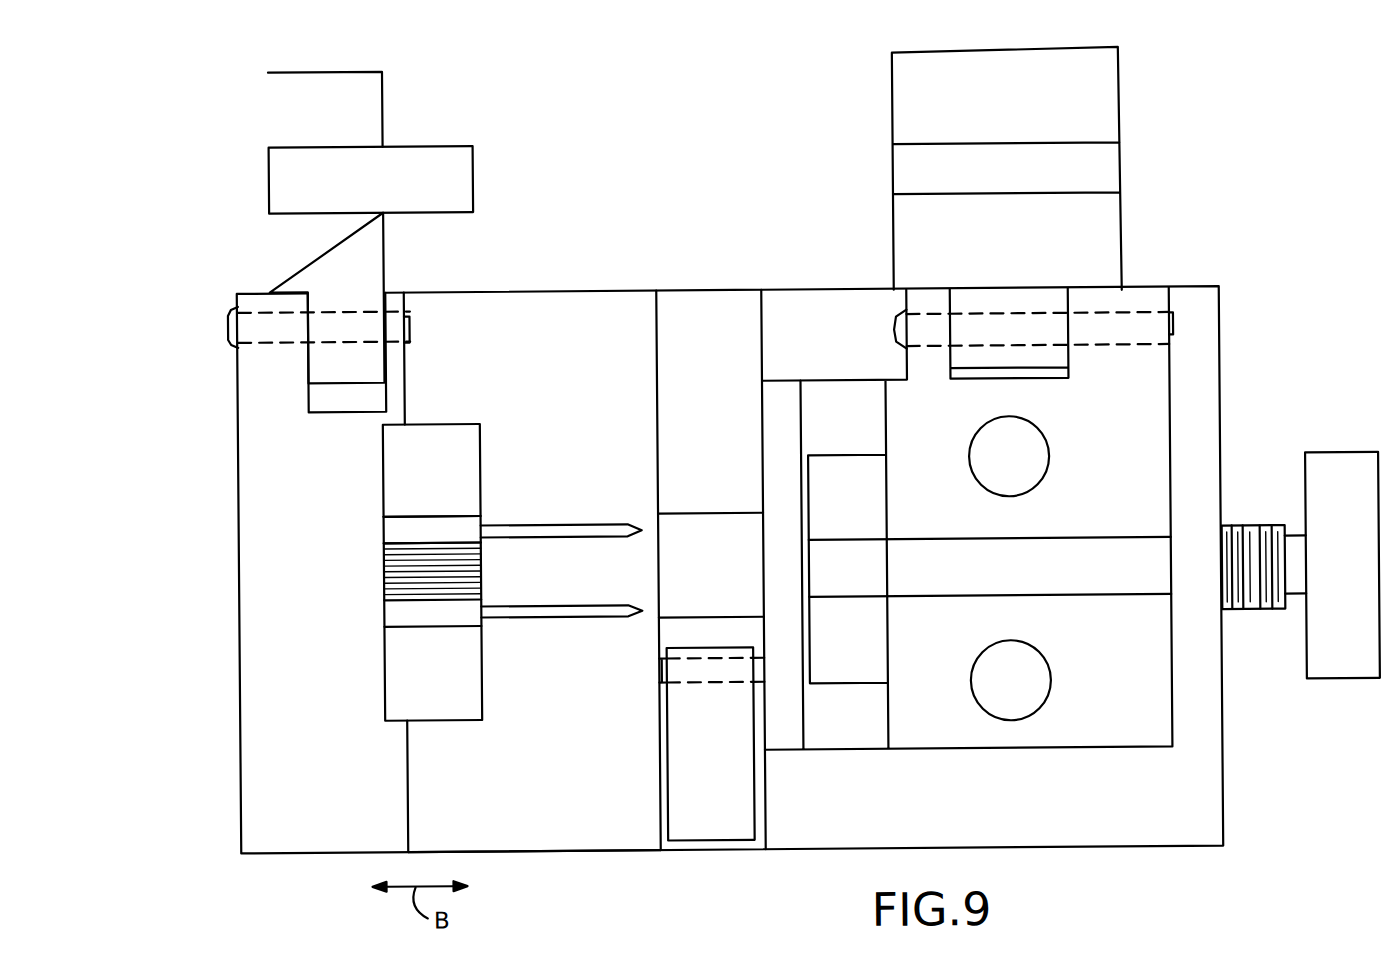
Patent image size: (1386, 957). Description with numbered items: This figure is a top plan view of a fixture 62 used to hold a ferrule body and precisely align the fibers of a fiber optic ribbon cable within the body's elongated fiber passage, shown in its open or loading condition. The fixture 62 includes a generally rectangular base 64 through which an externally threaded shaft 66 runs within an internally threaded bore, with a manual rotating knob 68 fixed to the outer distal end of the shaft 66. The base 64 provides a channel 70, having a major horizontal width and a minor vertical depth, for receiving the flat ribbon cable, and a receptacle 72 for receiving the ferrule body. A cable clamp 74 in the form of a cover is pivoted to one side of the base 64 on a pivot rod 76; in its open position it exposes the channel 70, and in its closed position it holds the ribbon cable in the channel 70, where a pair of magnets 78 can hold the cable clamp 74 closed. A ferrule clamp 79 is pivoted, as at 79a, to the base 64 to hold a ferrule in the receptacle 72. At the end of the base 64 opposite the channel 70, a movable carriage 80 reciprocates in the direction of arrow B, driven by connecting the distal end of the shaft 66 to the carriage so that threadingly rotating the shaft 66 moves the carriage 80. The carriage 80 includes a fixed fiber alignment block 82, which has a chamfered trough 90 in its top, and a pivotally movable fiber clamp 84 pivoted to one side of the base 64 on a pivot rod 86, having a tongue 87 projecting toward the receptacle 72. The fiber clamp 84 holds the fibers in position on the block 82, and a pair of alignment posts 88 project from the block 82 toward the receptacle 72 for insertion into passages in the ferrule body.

The fixture 62 is at (667, 268).
The base 64 is at (630, 824).
The shaft 66 is at (1266, 529).
The rotating knob 68 is at (1351, 665).
The channel 70 is at (1095, 541).
The receptacle 72 is at (680, 514).
The cable clamp 74 is at (1099, 106).
The pivot rod 76 is at (1120, 313).
The magnets 78 is at (1033, 447).
The ferrule clamp 79 is at (733, 815).
The pivot 79a is at (756, 672).
The movable carriage 80 is at (227, 820).
The fiber alignment block 82 is at (366, 501).
The fiber clamp 84 is at (289, 101).
The pivot rod 86 is at (359, 317).
The tongue 87 is at (455, 166).
The alignment posts 88 is at (562, 532).
The chamfered trough 90 is at (450, 523).